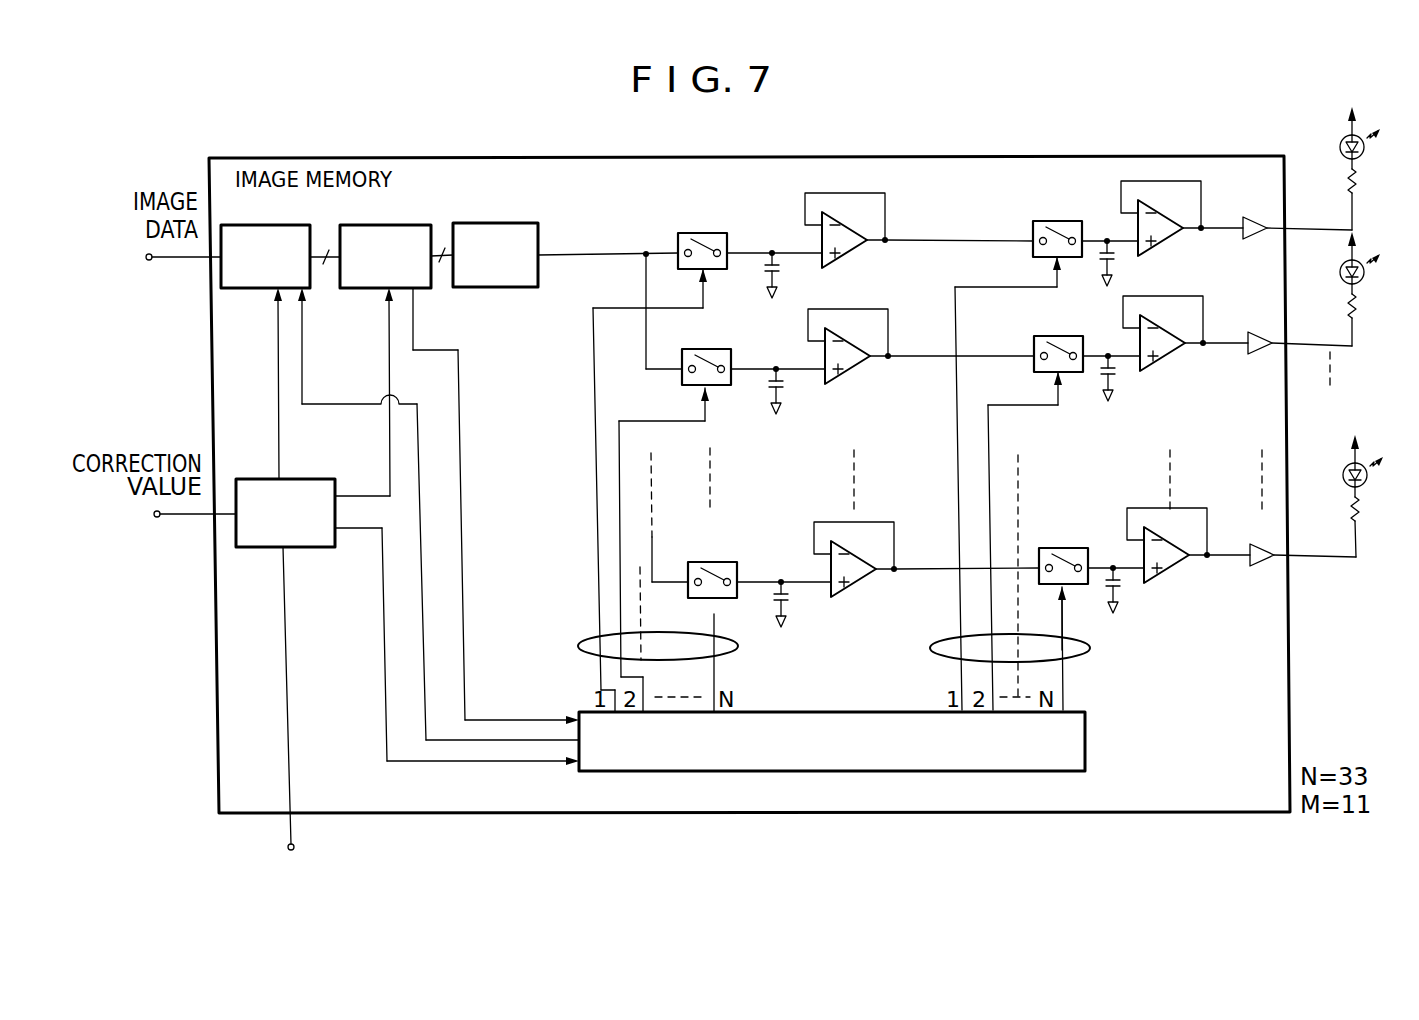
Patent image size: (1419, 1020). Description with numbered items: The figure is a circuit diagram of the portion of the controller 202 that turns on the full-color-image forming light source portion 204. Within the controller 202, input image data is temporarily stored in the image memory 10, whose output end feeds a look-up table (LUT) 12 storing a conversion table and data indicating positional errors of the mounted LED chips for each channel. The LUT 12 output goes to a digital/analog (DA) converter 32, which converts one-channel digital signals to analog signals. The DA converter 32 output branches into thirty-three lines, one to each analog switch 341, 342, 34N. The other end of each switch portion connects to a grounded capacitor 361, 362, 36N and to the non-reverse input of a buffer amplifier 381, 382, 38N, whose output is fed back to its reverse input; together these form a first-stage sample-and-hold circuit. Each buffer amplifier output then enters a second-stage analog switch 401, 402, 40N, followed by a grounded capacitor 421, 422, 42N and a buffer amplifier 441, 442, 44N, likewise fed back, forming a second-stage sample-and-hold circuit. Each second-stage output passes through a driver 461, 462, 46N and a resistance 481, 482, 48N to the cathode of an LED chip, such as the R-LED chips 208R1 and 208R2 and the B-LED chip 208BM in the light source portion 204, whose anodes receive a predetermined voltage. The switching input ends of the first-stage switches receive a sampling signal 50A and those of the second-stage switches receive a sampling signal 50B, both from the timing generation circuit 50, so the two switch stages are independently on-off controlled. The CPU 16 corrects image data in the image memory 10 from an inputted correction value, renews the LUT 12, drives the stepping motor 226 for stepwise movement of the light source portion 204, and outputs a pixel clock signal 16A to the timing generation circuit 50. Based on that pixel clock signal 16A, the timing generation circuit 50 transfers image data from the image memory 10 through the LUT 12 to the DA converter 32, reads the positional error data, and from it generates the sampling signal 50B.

The image memory 10 is at (256, 224).
The look-up table (LUT) 12 is at (411, 225).
The digital/analog (DA) converter 32 is at (518, 223).
The CPU 16 is at (292, 479).
The pixel clock signal 16A is at (383, 612).
The analog switch 341 is at (694, 233).
The analog switch 342 is at (696, 353).
The analog switch 34N is at (717, 566).
The capacitor 361 is at (782, 274).
The capacitor 362 is at (787, 390).
The capacitor 36N is at (797, 610).
The buffer amplifier 381 is at (860, 262).
The buffer amplifier 382 is at (867, 366).
The buffer amplifier 38N is at (877, 576).
The analog switch 401 is at (1055, 225).
The analog switch 402 is at (1041, 339).
The analog switch 40N is at (1053, 552).
The capacitor 421 is at (1114, 265).
The capacitor 422 is at (1114, 391).
The capacitor 42N is at (1126, 601).
The buffer amplifier 441 is at (1183, 239).
The buffer amplifier 442 is at (1185, 359).
The buffer amplifier 44N is at (1178, 575).
The driver 461 is at (1268, 250).
The driver 462 is at (1256, 358).
The driver 46N is at (1256, 572).
The resistance 481 is at (1344, 184).
The resistance 482 is at (1344, 299).
The resistance 48N is at (1348, 509).
The timing generation circuit 50 is at (898, 710).
The sampling signal 50A is at (596, 640).
The sampling signal 50B is at (1085, 655).
The controller 202 is at (1258, 157).
The full-color-image forming light source portion 204 is at (1328, 111).
The R-LED chip 208R1 is at (1340, 147).
The R-LED chip 208R2 is at (1340, 272).
The B-LED chip 208BM is at (1369, 487).
The stepping motor 226 is at (444, 706).